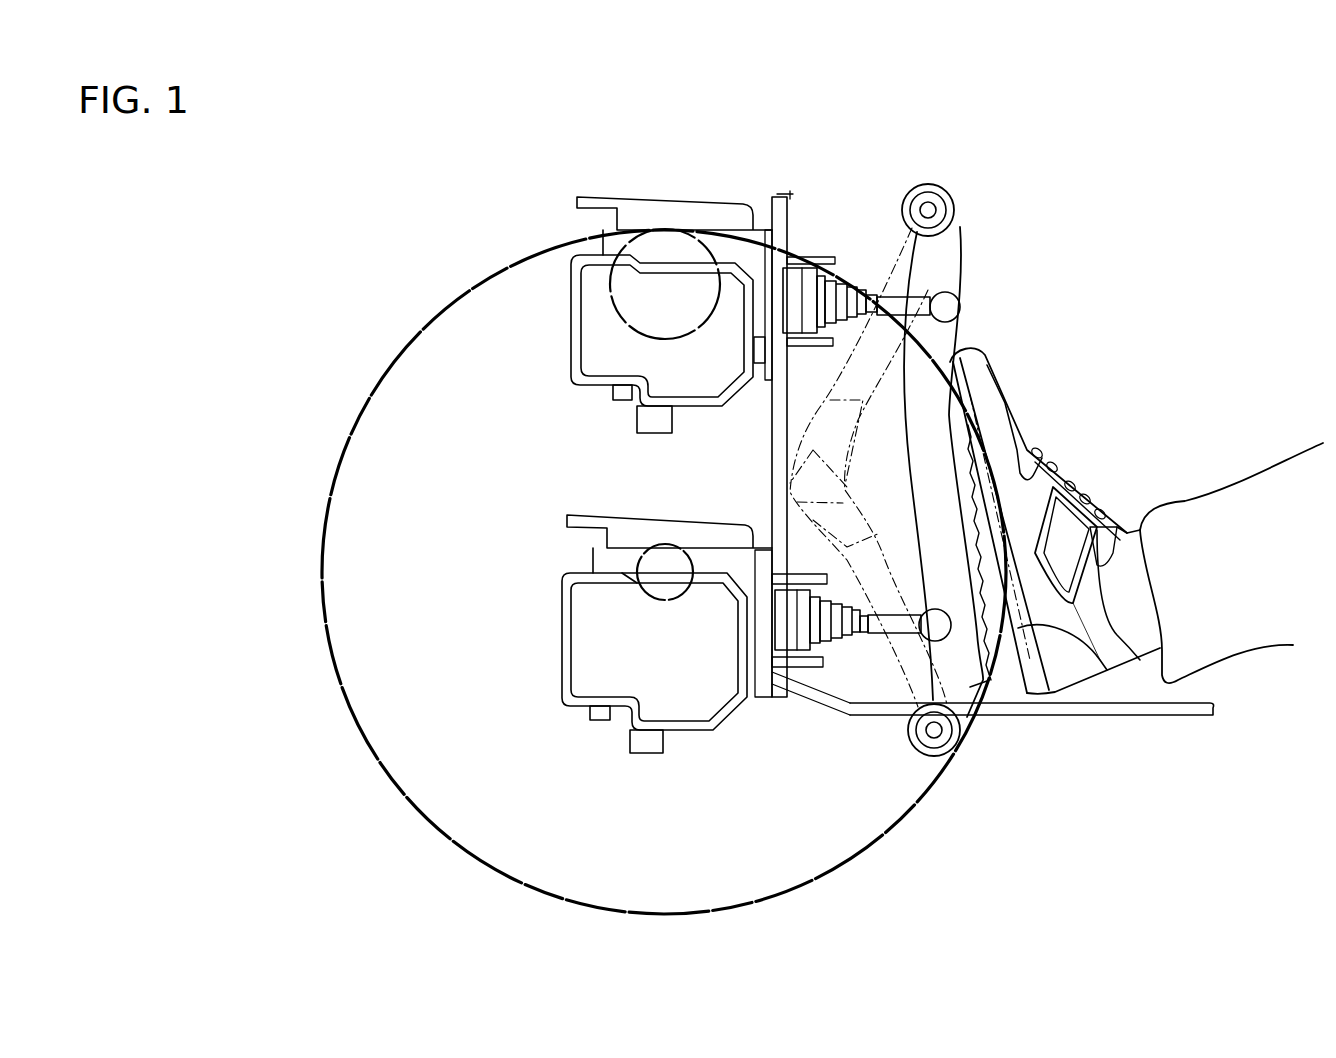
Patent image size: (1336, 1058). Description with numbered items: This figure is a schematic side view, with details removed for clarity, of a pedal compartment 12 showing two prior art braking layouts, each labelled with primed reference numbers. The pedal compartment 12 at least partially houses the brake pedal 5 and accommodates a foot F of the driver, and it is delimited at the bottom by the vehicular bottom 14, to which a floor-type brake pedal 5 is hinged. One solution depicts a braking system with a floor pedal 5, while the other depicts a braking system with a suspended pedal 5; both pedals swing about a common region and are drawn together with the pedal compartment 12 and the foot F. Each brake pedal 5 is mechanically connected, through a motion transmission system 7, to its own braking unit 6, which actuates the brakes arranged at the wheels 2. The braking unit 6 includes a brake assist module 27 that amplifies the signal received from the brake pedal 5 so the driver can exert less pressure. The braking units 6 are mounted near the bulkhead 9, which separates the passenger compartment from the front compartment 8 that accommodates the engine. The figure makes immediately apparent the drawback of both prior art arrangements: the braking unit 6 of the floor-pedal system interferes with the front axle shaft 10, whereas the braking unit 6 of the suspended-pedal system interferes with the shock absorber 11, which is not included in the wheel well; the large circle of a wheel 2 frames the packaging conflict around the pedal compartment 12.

The wheel 2 is at (395, 348).
The brake pedal 5 is at (970, 283).
The braking unit 6 is at (672, 195).
The motion transmission system 7 is at (882, 280).
The front compartment 8 is at (590, 480).
The bulkhead 9 is at (770, 468).
The front axle shaft 10 is at (627, 598).
The shock absorber 11 is at (640, 290).
The pedal compartment 12 is at (1082, 312).
The vehicular bottom 14 is at (1135, 715).
The brake assist module 27 is at (690, 707).
The foot F is at (1042, 470).